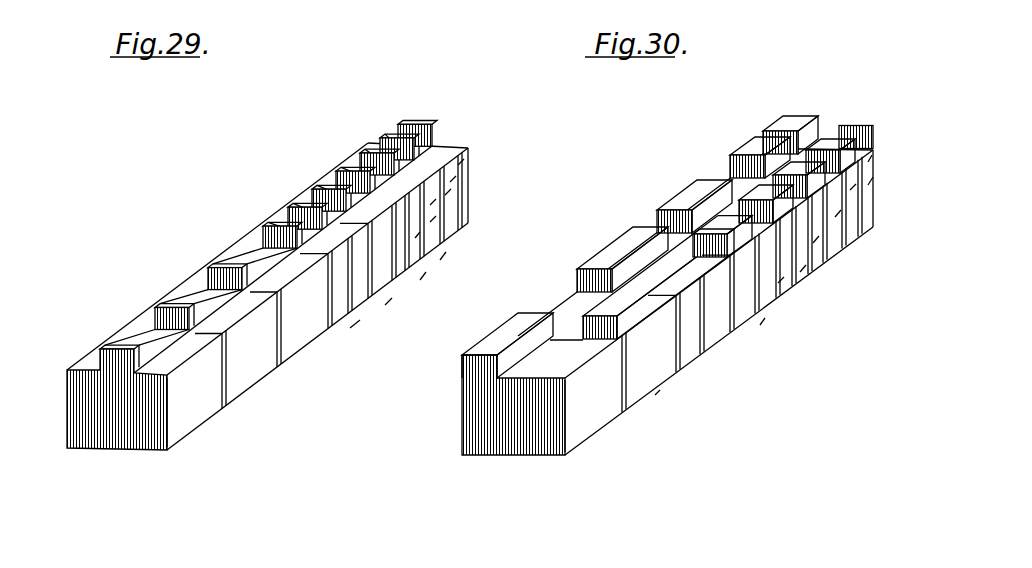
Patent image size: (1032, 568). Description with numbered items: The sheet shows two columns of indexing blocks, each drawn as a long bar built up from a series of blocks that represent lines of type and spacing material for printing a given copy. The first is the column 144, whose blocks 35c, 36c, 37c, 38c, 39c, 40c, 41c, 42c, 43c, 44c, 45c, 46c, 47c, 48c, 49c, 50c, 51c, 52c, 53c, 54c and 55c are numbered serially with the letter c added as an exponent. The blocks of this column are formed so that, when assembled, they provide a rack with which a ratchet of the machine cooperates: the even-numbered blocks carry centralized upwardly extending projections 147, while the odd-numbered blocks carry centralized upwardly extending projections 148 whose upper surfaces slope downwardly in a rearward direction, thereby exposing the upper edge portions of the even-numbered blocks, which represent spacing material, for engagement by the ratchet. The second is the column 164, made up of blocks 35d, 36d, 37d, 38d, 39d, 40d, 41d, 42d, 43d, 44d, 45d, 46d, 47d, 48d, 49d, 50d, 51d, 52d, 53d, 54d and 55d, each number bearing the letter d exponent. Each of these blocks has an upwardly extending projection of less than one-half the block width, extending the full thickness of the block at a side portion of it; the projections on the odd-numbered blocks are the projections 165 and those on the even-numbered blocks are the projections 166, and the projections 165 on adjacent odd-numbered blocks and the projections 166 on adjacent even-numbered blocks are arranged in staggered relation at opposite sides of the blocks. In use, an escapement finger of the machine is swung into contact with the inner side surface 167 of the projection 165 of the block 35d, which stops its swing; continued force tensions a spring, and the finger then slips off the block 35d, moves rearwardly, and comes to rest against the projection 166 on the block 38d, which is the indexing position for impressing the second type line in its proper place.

In FIG. 29, the column of blocks 144 is at (113, 428).
In FIG. 29, the centralized upwardly extending projections 147 is at (158, 318).
In FIG. 29, the centralized upwardly extending projections 148 is at (128, 348).
In FIG. 29, the block 35c is at (178, 441).
In FIG. 29, the block 36c is at (224, 406).
In FIG. 29, the block 37c is at (246, 382).
In FIG. 29, the block 38c is at (278, 357).
In FIG. 29, the block 39c is at (292, 347).
In FIG. 29, the block 40c is at (300, 330).
In FIG. 29, the block 41c is at (350, 328).
In FIG. 29, the block 42c is at (345, 304).
In FIG. 29, the block 43c is at (385, 305).
In FIG. 29, the block 44c is at (375, 280).
In FIG. 29, the block 45c is at (420, 280).
In FIG. 29, the block 46c is at (400, 262).
In FIG. 29, the block 47c is at (440, 260).
In FIG. 29, the block 48c is at (395, 254).
In FIG. 29, the block 49c is at (415, 238).
In FIG. 29, the block 50c is at (405, 228).
In FIG. 29, the block 51c is at (430, 222).
In FIG. 29, the block 52c is at (430, 205).
In FIG. 29, the block 53c is at (445, 195).
In FIG. 29, the block 54c is at (450, 182).
In FIG. 29, the block 55c is at (458, 165).
In FIG. 30, the column of blocks 164 is at (500, 440).
In FIG. 30, the projections 165 is at (482, 341).
In FIG. 30, the projections 166 is at (585, 322).
In FIG. 30, the inner side surface 167 is at (503, 362).
In FIG. 30, the block 35d is at (575, 452).
In FIG. 30, the block 36d is at (623, 410).
In FIG. 30, the block 37d is at (655, 395).
In FIG. 30, the block 38d is at (668, 372).
In FIG. 30, the block 39d is at (702, 362).
In FIG. 30, the block 40d is at (712, 340).
In FIG. 30, the block 41d is at (735, 312).
In FIG. 30, the block 42d is at (760, 325).
In FIG. 30, the block 43d is at (770, 307).
In FIG. 30, the block 44d is at (782, 300).
In FIG. 30, the block 45d is at (778, 283).
In FIG. 30, the block 46d is at (805, 275).
In FIG. 30, the block 47d is at (800, 272).
In FIG. 30, the block 48d is at (820, 258).
In FIG. 30, the block 49d is at (813, 243).
In FIG. 30, the block 50d is at (830, 230).
In FIG. 30, the block 51d is at (835, 217).
In FIG. 30, the block 52d is at (835, 202).
In FIG. 30, the block 53d is at (873, 177).
In FIG. 30, the block 54d is at (850, 190).
In FIG. 30, the block 55d is at (868, 162).